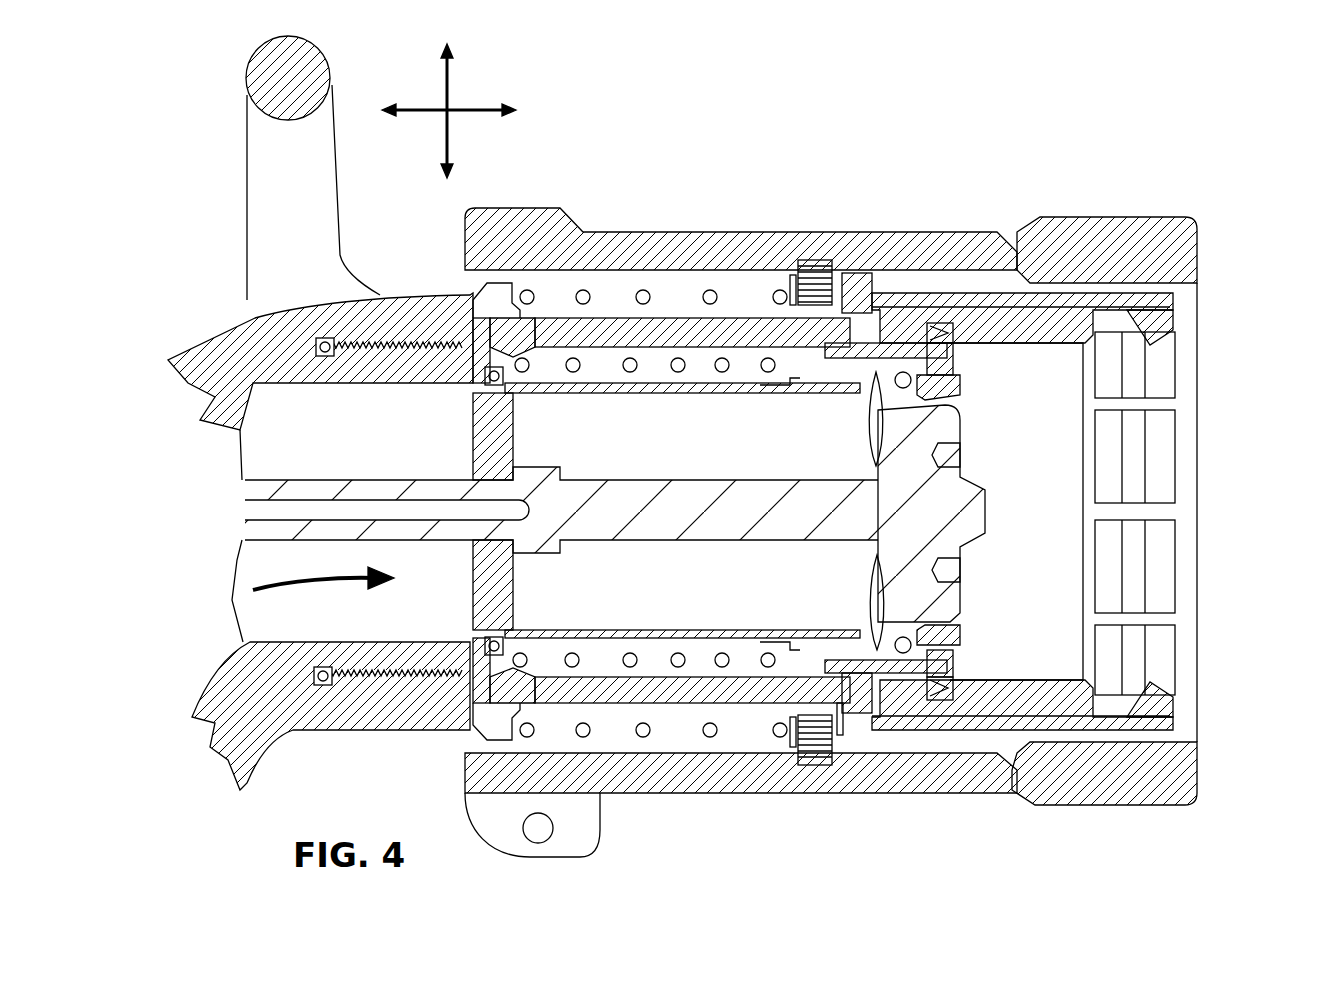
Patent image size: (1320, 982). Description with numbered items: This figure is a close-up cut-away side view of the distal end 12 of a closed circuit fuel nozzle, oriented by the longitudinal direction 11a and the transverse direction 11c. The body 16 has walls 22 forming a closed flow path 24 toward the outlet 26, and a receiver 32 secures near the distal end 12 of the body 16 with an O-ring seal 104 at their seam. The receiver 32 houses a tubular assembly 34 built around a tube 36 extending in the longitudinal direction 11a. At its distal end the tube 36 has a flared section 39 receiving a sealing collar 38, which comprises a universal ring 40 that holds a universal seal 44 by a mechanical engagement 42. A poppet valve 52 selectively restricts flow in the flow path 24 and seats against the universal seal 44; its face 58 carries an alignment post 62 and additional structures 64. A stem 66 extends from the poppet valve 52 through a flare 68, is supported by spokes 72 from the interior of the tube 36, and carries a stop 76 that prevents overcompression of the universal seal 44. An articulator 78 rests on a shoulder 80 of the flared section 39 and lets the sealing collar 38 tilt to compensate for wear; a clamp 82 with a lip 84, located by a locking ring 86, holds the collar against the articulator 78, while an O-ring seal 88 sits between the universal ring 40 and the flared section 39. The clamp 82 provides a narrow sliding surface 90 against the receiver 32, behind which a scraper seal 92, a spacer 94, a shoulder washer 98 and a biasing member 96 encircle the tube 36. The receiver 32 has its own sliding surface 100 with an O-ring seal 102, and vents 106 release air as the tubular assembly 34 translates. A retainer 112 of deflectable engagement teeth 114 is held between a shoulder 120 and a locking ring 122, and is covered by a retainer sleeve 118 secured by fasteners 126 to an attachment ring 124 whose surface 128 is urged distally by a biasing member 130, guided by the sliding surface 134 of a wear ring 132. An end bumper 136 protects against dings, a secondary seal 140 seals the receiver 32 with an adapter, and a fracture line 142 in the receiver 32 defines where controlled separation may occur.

The longitudinal direction 11a is at (478, 110).
The transverse direction 11c is at (448, 78).
The distal end 12 is at (1257, 527).
The body 16 is at (275, 752).
The walls 22 is at (232, 676).
The flow path 24 is at (296, 588).
The outlet 26 is at (1218, 598).
The receiver 32 is at (668, 702).
The tubular assembly 34 is at (762, 420).
The tube 36 is at (663, 395).
The sealing collar 38 is at (968, 380).
The flared section 39 is at (853, 392).
The universal ring 40 is at (889, 400).
The mechanical engagement 42 is at (963, 390).
The universal seal 44 is at (962, 630).
The poppet valve 52 is at (939, 523).
The face 58 is at (972, 595).
The alignment post 62 is at (980, 510).
The apertures or structures 64 is at (958, 576).
The stem 66 is at (645, 523).
The flare 68 is at (895, 585).
The spokes 72 is at (512, 612).
The stop 76 is at (540, 548).
The articulator 78 is at (876, 548).
The shoulder 80 is at (855, 638).
The clamp 82 is at (903, 655).
The lip 84 is at (948, 667).
The locking ring 86 is at (792, 650).
The O-ring seal 88 is at (928, 670).
The sliding surface 90 is at (822, 714).
The scraper seal 92 is at (792, 645).
The spacer 94 is at (766, 648).
The biasing member 96 is at (574, 668).
The shoulder washer 98 is at (720, 658).
The sliding surface 100 is at (368, 392).
The O-ring seal 102 is at (493, 380).
The O-ring seal 104 is at (325, 340).
The vents 106 is at (518, 332).
The retainer 112 is at (966, 288).
The engagement teeth 114 is at (1168, 425).
The retainer sleeve 118 is at (648, 235).
The shoulder 120 is at (875, 300).
The locking ring 122 is at (855, 345).
The attachment ring 124 is at (800, 268).
The fasteners 126 is at (820, 246).
The surface 128 is at (785, 282).
The biasing member 130 is at (706, 290).
The wear ring 132 is at (486, 305).
The sliding surface 134 is at (498, 280).
The end bumper 136 is at (1170, 232).
The secondary seal 140 is at (955, 335).
The fracture line 142 is at (888, 682).